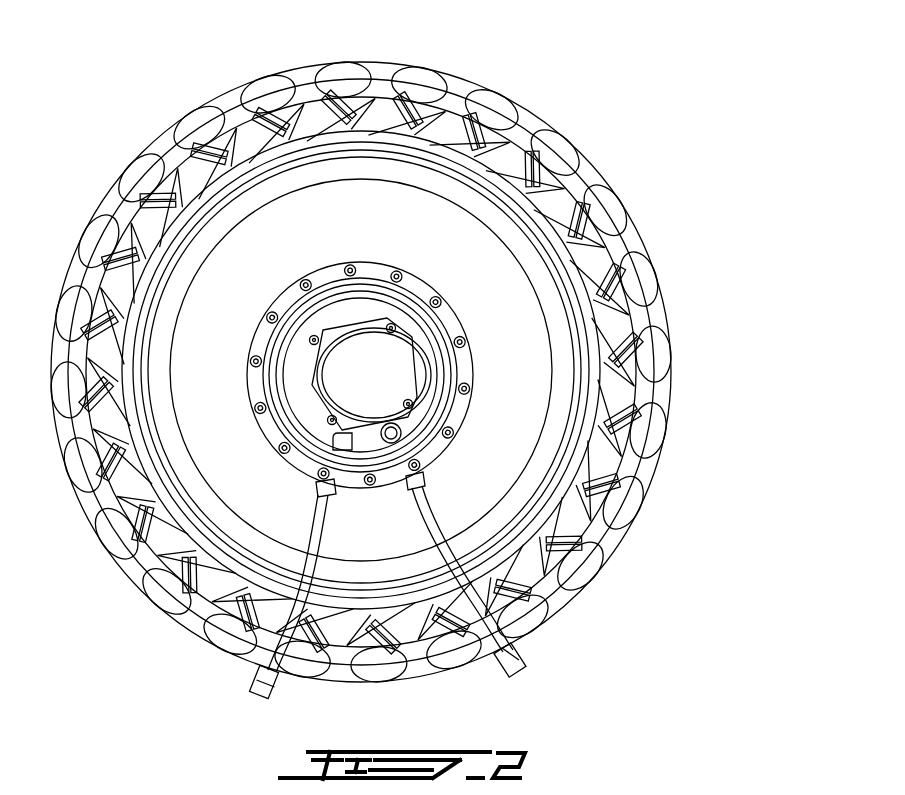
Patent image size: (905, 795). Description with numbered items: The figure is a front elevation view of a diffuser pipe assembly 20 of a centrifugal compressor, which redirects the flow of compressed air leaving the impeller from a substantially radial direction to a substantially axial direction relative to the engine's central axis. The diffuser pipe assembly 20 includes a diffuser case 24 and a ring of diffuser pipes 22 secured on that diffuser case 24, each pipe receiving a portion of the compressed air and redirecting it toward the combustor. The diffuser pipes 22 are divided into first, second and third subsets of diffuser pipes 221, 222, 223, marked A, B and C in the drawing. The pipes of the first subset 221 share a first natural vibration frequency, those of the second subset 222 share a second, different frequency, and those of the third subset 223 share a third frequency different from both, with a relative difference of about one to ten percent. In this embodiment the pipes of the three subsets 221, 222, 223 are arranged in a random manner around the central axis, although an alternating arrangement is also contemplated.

The diffuser pipe assembly 20 is at (690, 130).
The diffuser pipes 22 is at (617, 200).
The diffuser case 24 is at (374, 236).
The first subset of diffuser pipes 221 is at (669, 355).
The second subset of diffuser pipes 222 is at (642, 513).
The third subset of diffuser pipes 223 is at (597, 577).